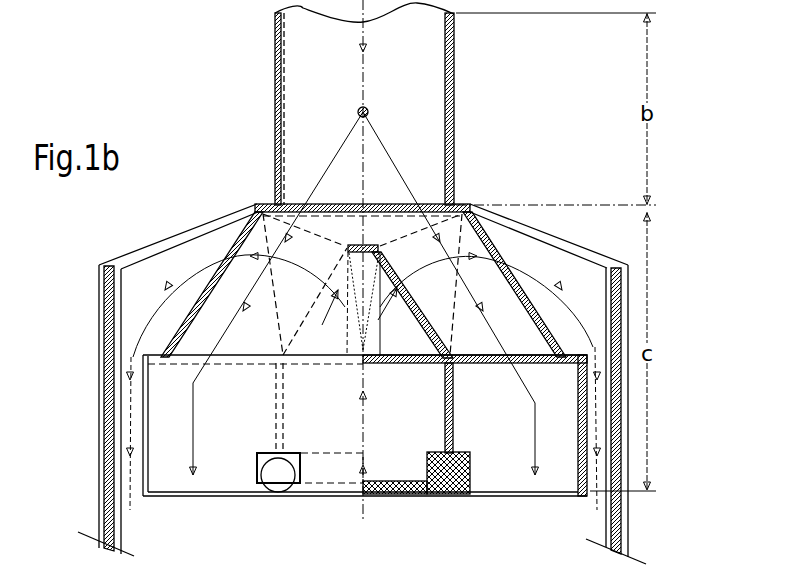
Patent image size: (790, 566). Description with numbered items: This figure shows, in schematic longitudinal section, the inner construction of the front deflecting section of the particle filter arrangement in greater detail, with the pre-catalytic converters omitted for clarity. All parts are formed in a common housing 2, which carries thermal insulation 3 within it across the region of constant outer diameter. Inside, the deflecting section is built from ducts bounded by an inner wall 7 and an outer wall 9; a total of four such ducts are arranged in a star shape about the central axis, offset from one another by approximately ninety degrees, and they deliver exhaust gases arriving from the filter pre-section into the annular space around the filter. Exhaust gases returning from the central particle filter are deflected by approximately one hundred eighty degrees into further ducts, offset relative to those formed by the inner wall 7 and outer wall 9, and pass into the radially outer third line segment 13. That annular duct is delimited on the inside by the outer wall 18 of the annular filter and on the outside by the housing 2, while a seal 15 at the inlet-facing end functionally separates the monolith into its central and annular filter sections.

The housing 2 is at (113, 247).
The thermal insulation 3 is at (100, 297).
The inner wall 7 is at (407, 280).
The outer wall 9 is at (540, 316).
The third line segment 13 is at (124, 441).
The seal 15 is at (453, 495).
The outer wall of the filter 18 is at (145, 400).